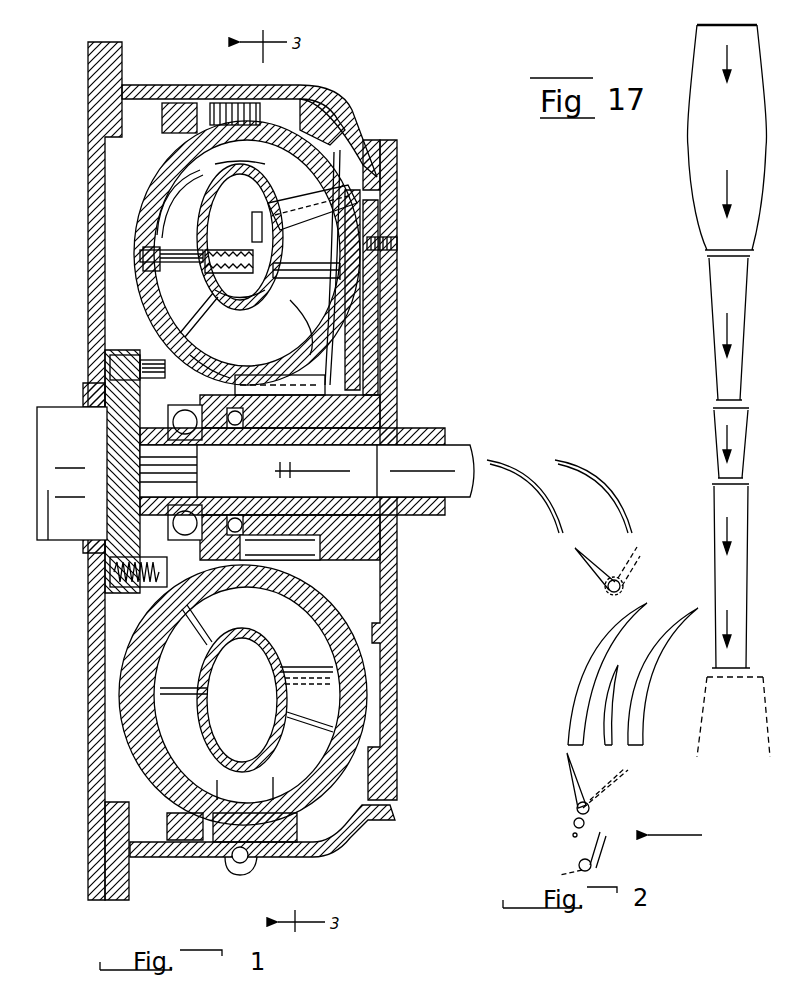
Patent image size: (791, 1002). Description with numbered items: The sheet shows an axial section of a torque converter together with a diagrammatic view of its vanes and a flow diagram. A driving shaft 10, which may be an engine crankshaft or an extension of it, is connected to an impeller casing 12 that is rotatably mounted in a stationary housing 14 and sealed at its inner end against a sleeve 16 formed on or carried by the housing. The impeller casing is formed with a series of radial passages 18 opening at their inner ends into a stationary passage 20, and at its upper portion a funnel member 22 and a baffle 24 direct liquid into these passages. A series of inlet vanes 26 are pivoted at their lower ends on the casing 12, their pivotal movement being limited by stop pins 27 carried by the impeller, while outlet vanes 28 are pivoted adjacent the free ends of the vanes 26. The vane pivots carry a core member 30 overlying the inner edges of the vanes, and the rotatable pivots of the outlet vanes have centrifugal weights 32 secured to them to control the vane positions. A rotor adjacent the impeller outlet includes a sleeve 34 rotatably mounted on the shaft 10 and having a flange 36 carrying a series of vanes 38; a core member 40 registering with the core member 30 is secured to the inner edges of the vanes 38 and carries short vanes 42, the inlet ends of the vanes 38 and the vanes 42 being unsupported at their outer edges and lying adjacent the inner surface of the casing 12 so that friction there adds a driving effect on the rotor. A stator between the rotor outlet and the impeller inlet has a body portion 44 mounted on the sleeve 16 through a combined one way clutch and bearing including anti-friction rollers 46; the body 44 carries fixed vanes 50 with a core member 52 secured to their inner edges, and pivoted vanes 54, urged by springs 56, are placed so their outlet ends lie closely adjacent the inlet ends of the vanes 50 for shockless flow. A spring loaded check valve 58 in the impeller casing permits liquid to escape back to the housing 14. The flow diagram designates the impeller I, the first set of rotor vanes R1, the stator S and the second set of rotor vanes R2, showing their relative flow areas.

In FIG. 1, the driving shaft 10 is at (458, 455).
In FIG. 1, the impeller casing 12 is at (148, 173).
In FIG. 1, the stationary housing 14 is at (187, 93).
In FIG. 1, the sleeve 16 is at (373, 408).
In FIG. 1, the radial passages 18 is at (367, 327).
In FIG. 1, the stationary passage 20 is at (370, 222).
In FIG. 1, the funnel member 22 is at (338, 153).
In FIG. 1, the baffle 24 is at (317, 117).
In FIG. 1, the inlet vanes 26 is at (306, 261).
In FIG. 2, the inlet vanes 26 is at (595, 853).
In FIG. 2, the stop pins 27 is at (573, 836).
In FIG. 1, the outlet vanes 28 is at (312, 206).
In FIG. 2, the outlet vanes 28 is at (572, 783).
In FIG. 1, the core member 30 is at (249, 214).
In FIG. 1, the centrifugal weights 32 is at (272, 253).
In FIG. 1, the sleeve 34 is at (427, 428).
In FIG. 1, the flange 36 is at (142, 265).
In FIG. 1, the rotor vanes 38 is at (180, 204).
In FIG. 2, the rotor vanes 38 is at (565, 705).
In FIG. 1, the core member 40 is at (240, 237).
In FIG. 1, the short vanes 42 is at (233, 160).
In FIG. 2, the short vanes 42 is at (610, 712).
In FIG. 1, the stator body portion 44 is at (208, 362).
In FIG. 1, the anti-friction rollers 46 is at (260, 383).
In FIG. 1, the fixed vanes 50 is at (288, 327).
In FIG. 2, the fixed vanes 50 is at (548, 512).
In FIG. 1, the core member 52 is at (240, 291).
In FIG. 1, the pivoted vanes 54 is at (195, 313).
In FIG. 2, the pivoted vanes 54 is at (598, 570).
In FIG. 1, the springs 56 is at (218, 262).
In FIG. 1, the spring loaded check valve 58 is at (105, 588).
In FIG. 2, the impeller I is at (713, 720).
In FIG. 17, the impeller I is at (693, 159).
In FIG. 17, the first set of rotor vanes R1 is at (717, 323).
In FIG. 17, the stator S is at (718, 422).
In FIG. 17, the second set of rotor vanes R2 is at (722, 512).